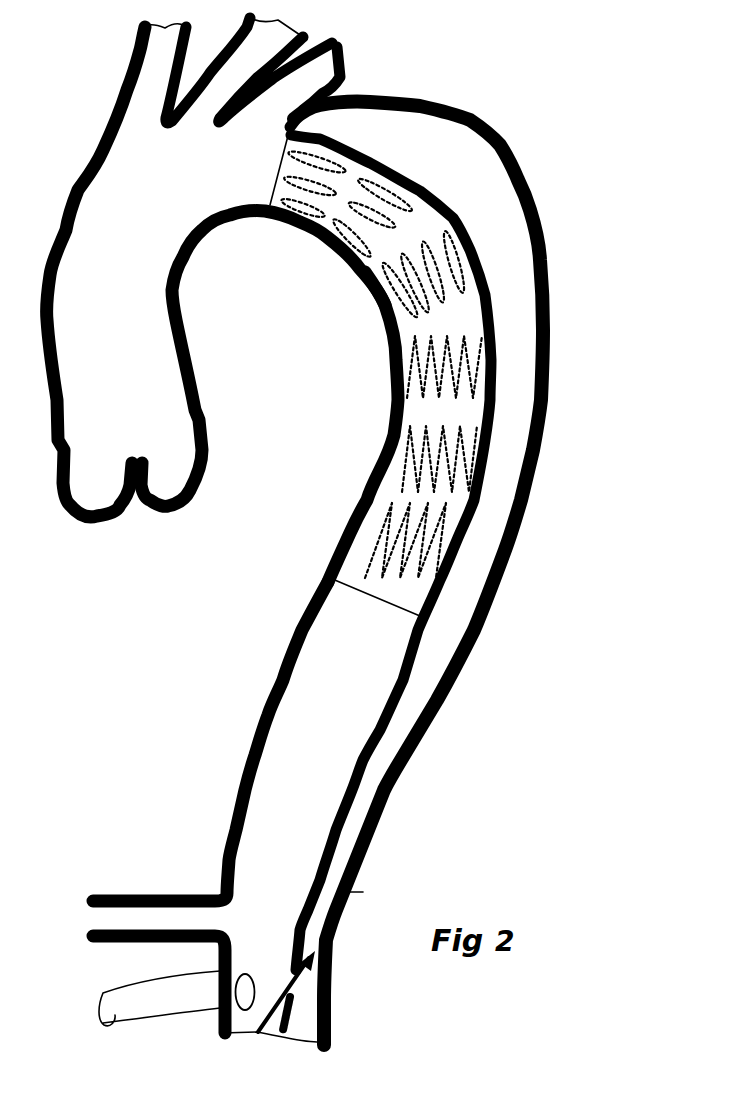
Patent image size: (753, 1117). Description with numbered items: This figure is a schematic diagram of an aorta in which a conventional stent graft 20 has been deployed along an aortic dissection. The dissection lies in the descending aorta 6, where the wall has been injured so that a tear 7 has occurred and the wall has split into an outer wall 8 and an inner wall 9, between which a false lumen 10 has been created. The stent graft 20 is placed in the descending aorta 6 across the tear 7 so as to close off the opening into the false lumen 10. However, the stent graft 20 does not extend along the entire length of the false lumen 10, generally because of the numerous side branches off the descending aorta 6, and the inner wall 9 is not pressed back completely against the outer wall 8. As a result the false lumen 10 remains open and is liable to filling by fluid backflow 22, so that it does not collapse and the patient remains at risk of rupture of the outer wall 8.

The descending aorta 6 is at (340, 555).
The tear 7 is at (407, 173).
The outer wall 8 is at (548, 398).
The inner wall 9 is at (485, 493).
The false lumen 10 is at (497, 573).
The stent graft 20 is at (372, 278).
The fluid backflow 22 is at (297, 1007).